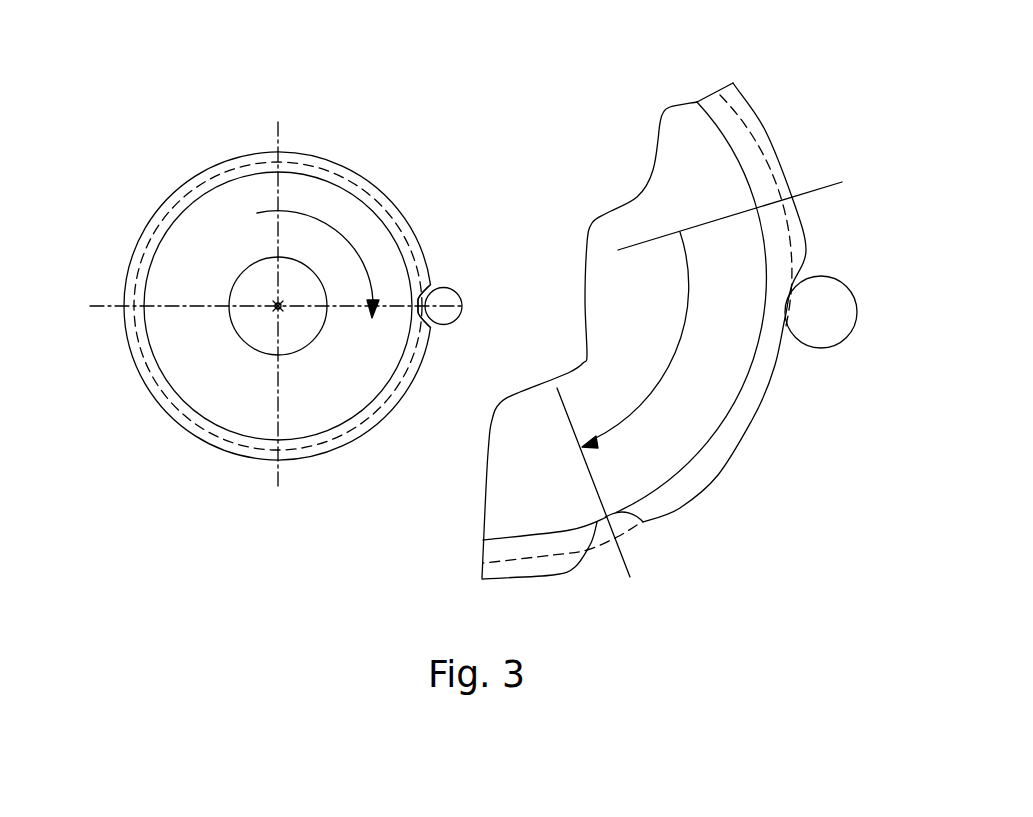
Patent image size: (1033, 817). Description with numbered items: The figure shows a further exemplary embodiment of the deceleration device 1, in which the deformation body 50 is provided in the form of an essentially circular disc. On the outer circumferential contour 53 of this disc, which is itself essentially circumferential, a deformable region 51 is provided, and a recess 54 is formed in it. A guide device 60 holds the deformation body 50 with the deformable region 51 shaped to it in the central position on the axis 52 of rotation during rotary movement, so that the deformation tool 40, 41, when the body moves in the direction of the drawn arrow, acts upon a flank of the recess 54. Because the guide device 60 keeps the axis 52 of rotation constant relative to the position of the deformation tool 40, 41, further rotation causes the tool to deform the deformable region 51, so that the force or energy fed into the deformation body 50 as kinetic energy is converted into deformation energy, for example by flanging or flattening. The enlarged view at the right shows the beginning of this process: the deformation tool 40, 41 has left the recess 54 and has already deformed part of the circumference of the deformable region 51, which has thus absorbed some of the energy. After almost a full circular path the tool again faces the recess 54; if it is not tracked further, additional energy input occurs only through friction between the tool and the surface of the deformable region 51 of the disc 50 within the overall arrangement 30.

The deceleration device 1 is at (110, 130).
The rim unit 30 is at (318, 136).
The deformation tool 40 is at (663, 274).
The deformation tool 41 is at (446, 300).
The deformation body 50 is at (213, 227).
The deformable region 51 is at (133, 262).
The axis of rotation 52 is at (282, 316).
The outer circumferential contour 53 is at (386, 195).
The recess 54 is at (425, 290).
The guide device 60 is at (228, 335).